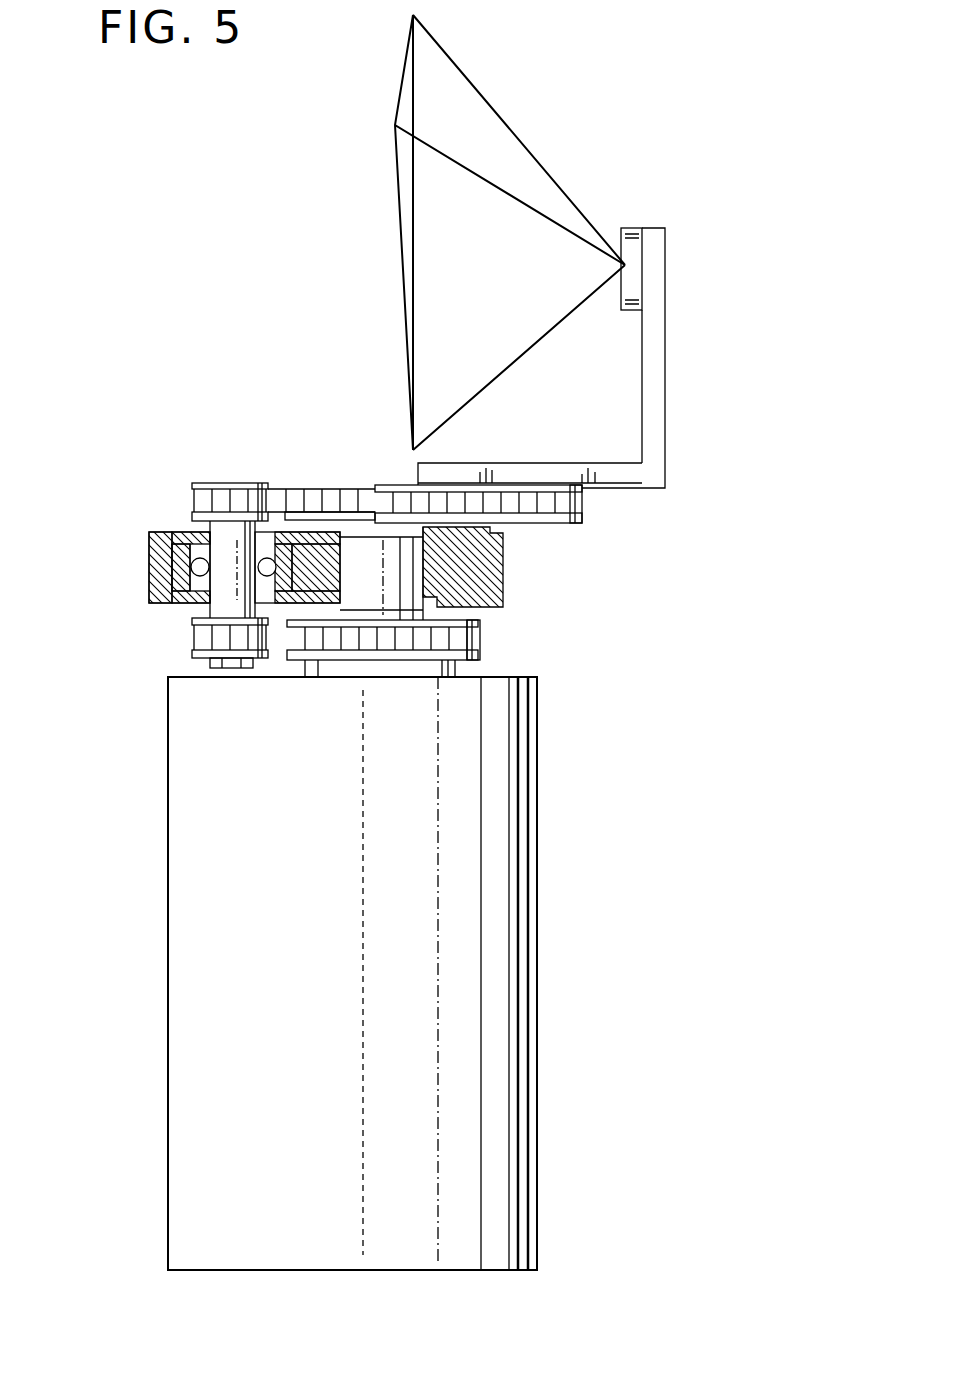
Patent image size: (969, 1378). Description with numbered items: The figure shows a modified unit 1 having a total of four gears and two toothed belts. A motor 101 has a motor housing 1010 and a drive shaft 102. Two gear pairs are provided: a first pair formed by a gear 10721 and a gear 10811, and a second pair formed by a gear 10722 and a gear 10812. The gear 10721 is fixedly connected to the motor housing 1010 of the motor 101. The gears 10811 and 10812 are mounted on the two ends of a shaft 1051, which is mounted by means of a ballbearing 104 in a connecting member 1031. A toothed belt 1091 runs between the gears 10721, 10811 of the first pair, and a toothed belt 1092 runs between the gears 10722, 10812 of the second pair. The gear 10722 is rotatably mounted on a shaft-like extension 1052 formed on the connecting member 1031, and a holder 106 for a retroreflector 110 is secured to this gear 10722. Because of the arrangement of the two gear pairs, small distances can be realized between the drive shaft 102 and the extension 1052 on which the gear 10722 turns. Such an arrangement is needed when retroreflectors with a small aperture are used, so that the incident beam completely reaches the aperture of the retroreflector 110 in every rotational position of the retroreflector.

The motor 101 is at (497, 887).
The motor housing 1010 is at (537, 950).
The gear 10811 is at (215, 660).
The toothed belt 1091 is at (326, 650).
The gear 10721 is at (480, 622).
The connecting member 1031 is at (148, 568).
The ballbearing 104 is at (173, 598).
The shaft 1051 is at (215, 522).
The drive shaft 102 is at (415, 578).
The gear 10812 is at (224, 487).
The toothed belt 1092 is at (350, 490).
The gear 10722 is at (583, 515).
The shaft-like extension 1052 is at (485, 472).
The holder 106 is at (636, 270).
The retroreflector 110 is at (478, 120).
The unit 1 is at (150, 856).